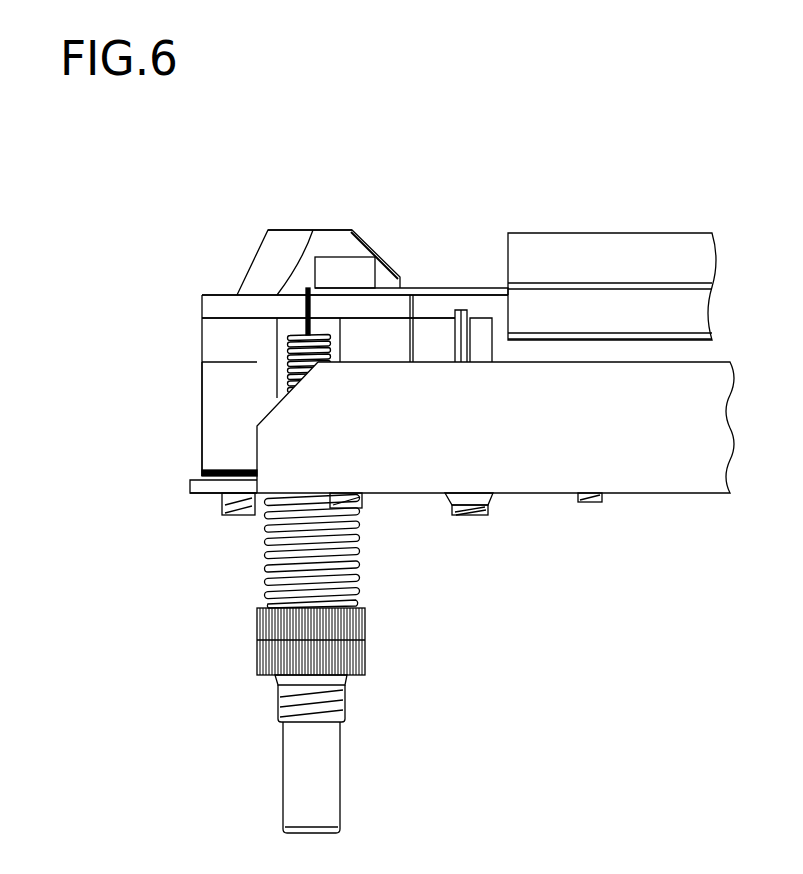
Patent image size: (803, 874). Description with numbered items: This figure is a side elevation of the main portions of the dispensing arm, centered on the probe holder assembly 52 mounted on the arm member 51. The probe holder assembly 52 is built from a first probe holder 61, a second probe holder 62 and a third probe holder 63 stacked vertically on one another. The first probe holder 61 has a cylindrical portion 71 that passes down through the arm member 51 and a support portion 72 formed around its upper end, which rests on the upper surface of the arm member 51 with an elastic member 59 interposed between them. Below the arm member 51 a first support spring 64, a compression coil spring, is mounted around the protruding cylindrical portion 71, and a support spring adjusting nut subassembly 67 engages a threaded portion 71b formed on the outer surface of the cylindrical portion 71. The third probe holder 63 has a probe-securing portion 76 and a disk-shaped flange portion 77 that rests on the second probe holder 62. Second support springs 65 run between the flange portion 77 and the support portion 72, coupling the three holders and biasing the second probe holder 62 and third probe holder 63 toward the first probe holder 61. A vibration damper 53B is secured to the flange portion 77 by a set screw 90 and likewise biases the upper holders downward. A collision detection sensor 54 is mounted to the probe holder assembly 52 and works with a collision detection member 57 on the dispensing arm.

The probe holder assembly 52 is at (188, 210).
The probe-securing portion 76 is at (280, 245).
The set screws 90 is at (343, 273).
The collision detection member 57 is at (422, 295).
The collision detection sensor 54 is at (442, 330).
The vibration damper 53B is at (645, 252).
The third probe holder 63 is at (253, 278).
The flange portion 77 is at (213, 305).
The second probe holder 62 is at (200, 347).
The second support springs 65 is at (285, 372).
The first probe holder 61 is at (205, 445).
The support portion 72 is at (222, 455).
The elastic member 59 is at (195, 481).
The arm member 51 is at (673, 473).
The first support spring 64 is at (262, 583).
The support spring adjusting nut subassembly 67 is at (257, 640).
The threaded portion 71b is at (347, 710).
The cylindrical portion 71 is at (342, 786).